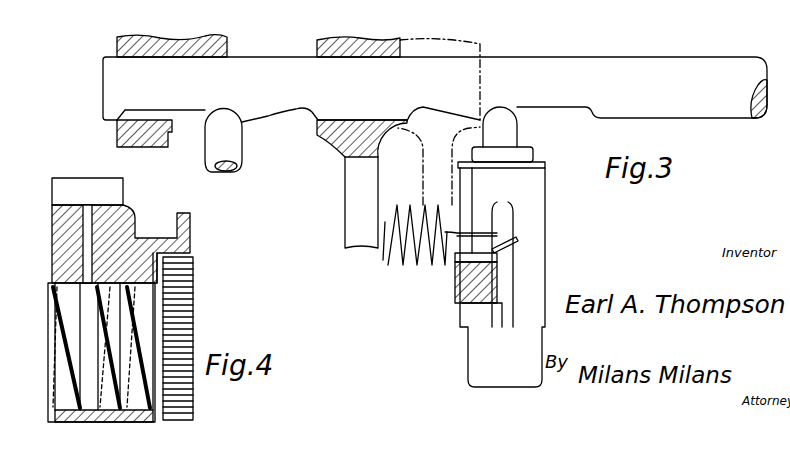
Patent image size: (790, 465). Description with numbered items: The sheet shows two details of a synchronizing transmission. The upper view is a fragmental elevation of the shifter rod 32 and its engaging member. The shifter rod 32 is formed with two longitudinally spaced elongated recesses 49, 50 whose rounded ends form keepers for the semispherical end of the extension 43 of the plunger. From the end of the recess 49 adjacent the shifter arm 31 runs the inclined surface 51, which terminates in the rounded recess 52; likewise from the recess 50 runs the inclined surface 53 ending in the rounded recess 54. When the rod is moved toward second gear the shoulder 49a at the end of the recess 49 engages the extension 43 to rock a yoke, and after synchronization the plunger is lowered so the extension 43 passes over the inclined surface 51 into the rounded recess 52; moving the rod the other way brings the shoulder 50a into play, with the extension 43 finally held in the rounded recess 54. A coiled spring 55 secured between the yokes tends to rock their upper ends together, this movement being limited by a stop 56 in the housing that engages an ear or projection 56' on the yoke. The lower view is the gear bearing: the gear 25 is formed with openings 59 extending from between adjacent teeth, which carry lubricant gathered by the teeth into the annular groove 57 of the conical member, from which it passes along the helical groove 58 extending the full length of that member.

In FIG. 3, the shifter rod 32 is at (648, 58).
In FIG. 3, the recess 50 is at (208, 109).
In FIG. 3, the shoulder 50a is at (233, 110).
In FIG. 3, the inclined surface 53 is at (271, 112).
In FIG. 3, the rounded recess 54 is at (322, 103).
In FIG. 3, the rounded recess 52 is at (419, 108).
In FIG. 3, the inclined surface 51 is at (462, 113).
In FIG. 3, the shoulder 49a is at (487, 108).
In FIG. 3, the extension of the plunger 43 is at (233, 143).
In FIG. 3, the recess 49 is at (592, 118).
In FIG. 3, the shifter arm 31 is at (353, 215).
In FIG. 3, the coiled spring 55 is at (390, 253).
In FIG. 3, the stop 56 is at (457, 280).
In FIG. 3, the ear or projection 56' is at (514, 243).
In FIG. 4, the gear 25 is at (135, 218).
In FIG. 4, the openings 59 is at (90, 243).
In FIG. 4, the annular groove 57 is at (90, 327).
In FIG. 4, the helical groove 58 is at (73, 363).